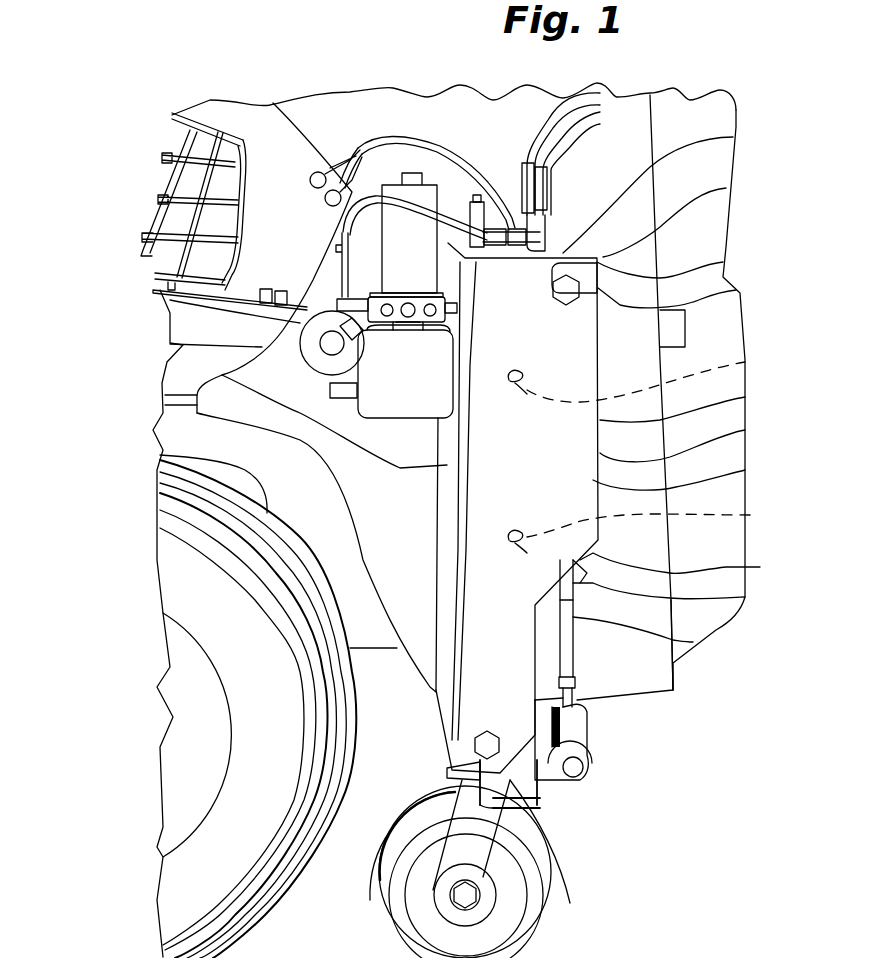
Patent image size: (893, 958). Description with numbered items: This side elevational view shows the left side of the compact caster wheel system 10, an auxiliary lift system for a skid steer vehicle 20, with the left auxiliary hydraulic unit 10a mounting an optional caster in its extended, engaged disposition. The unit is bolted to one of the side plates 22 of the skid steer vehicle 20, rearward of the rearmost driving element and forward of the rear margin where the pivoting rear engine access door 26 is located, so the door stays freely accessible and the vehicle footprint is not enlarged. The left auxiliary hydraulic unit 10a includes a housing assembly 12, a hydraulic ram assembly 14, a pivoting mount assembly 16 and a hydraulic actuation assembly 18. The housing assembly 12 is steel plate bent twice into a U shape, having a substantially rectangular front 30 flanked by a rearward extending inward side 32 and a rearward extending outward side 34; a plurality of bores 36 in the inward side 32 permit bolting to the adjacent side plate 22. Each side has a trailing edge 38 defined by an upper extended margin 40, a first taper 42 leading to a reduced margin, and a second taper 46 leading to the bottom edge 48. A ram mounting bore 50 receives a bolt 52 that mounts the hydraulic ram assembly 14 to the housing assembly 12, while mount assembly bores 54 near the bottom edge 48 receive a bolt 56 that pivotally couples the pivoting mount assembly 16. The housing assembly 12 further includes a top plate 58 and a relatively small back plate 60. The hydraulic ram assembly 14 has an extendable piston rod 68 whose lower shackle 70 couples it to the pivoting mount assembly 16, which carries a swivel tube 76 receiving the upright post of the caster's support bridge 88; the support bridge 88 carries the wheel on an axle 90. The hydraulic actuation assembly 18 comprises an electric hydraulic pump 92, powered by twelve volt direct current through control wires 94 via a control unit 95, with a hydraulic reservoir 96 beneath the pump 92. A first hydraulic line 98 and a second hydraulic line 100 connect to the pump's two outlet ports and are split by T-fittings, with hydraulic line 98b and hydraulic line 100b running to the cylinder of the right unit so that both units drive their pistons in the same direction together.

The compact caster wheel system 10 is at (372, 158).
The left auxiliary hydraulic unit 10a is at (388, 46).
The housing assembly 12 is at (608, 342).
The hydraulic ram assembly 14 is at (588, 672).
The pivoting mount assembly 16 is at (560, 796).
The hydraulic actuation assembly 18 is at (390, 263).
The skid steer vehicle 20 is at (293, 381).
The side plates 22 is at (673, 680).
The rear engine access door 26 is at (745, 537).
The substantially rectangular front 30 is at (197, 417).
The inward side 32 is at (745, 597).
The outward side 34 is at (745, 470).
The bores 36 is at (745, 362).
The trailing edge 38 is at (745, 430).
The upper extended margin 40 is at (745, 397).
The first taper 42 is at (693, 642).
The second taper 46 is at (548, 803).
The bottom edge 48 is at (390, 893).
The ram mounting bore 50 is at (736, 290).
The bolt 52 is at (723, 262).
The mount assembly bores 54 is at (480, 733).
The bolt 56 is at (583, 770).
The top plate 58 is at (733, 137).
The back plate 60 is at (726, 188).
The piston rod 68 is at (573, 648).
The lower shackle 70 is at (585, 737).
The swivel tube 76 is at (487, 875).
The support bridge 88 is at (520, 945).
The axle 90 is at (430, 950).
The electric hydraulic pump 92 is at (390, 238).
The control wires 94 is at (386, 185).
The control unit 95 is at (455, 205).
The hydraulic reservoir 96 is at (197, 365).
The first hydraulic line 98 is at (215, 103).
The hydraulic line 98b is at (548, 88).
The second hydraulic line 100 is at (356, 176).
The hydraulic line 100b is at (600, 118).